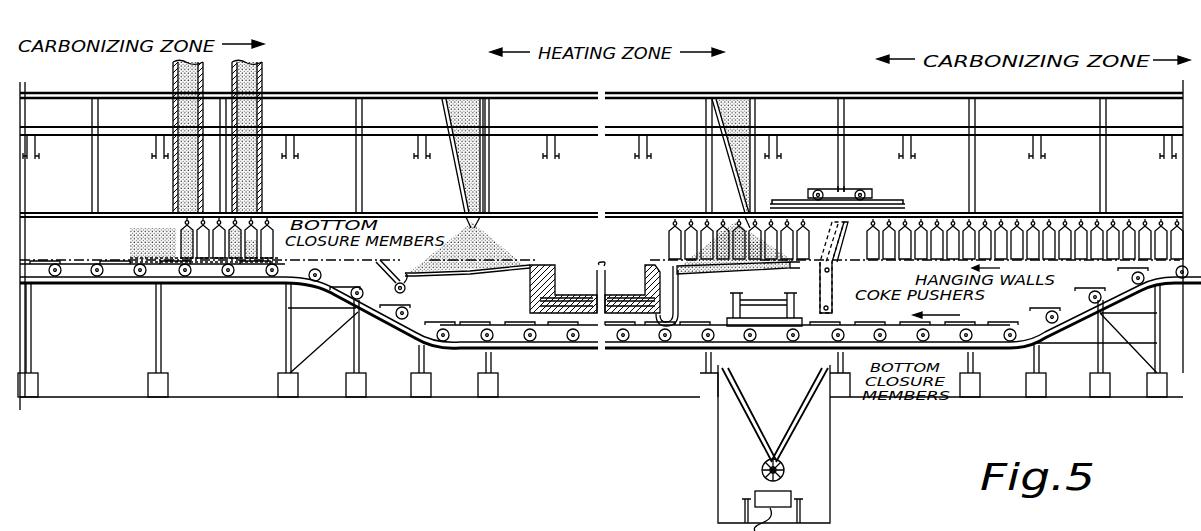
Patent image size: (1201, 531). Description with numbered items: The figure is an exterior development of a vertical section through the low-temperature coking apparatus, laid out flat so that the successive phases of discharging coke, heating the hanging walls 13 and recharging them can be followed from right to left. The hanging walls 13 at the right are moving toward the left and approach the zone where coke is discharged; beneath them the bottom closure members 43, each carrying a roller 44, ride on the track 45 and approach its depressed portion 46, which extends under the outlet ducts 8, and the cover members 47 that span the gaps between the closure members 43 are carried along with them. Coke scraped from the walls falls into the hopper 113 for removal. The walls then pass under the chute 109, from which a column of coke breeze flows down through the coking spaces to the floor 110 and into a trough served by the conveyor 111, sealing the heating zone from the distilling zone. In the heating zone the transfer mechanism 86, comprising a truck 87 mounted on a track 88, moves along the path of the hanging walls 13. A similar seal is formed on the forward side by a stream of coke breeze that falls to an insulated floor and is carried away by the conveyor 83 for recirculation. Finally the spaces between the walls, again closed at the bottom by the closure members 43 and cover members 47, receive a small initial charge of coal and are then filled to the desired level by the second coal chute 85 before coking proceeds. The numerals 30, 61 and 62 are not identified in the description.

The outlet ducts 8 is at (570, 270).
The hanging walls 13 is at (1045, 238).
The coke pusher 30 is at (835, 268).
The closure members 43 is at (73, 292).
The roller 44 is at (137, 300).
The track 45 is at (240, 292).
The depressed portion 46 is at (648, 348).
The channel members 47 is at (1000, 285).
The coal feed funnel 61 is at (476, 96).
The bottom closure plate 62 is at (484, 276).
The conveyor 83 is at (406, 287).
The second coal chute 85 is at (173, 72).
The transfer mechanism 86 is at (830, 190).
The truck 87 is at (846, 190).
The track 88 is at (888, 203).
The chute 109 is at (762, 116).
The floor 110 is at (736, 272).
The conveyor 111 is at (678, 320).
The hopper 113 is at (745, 432).